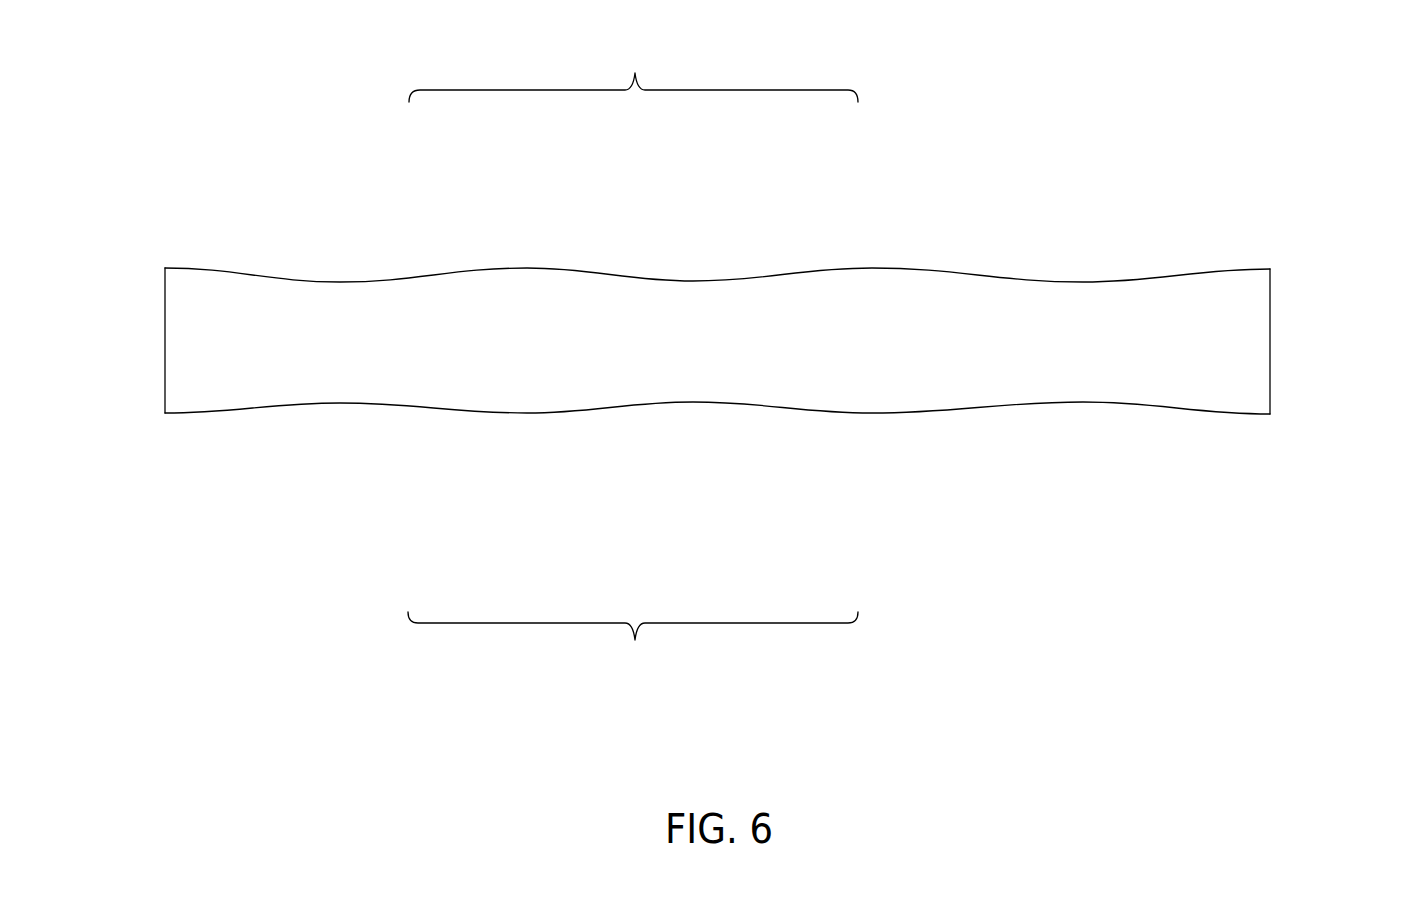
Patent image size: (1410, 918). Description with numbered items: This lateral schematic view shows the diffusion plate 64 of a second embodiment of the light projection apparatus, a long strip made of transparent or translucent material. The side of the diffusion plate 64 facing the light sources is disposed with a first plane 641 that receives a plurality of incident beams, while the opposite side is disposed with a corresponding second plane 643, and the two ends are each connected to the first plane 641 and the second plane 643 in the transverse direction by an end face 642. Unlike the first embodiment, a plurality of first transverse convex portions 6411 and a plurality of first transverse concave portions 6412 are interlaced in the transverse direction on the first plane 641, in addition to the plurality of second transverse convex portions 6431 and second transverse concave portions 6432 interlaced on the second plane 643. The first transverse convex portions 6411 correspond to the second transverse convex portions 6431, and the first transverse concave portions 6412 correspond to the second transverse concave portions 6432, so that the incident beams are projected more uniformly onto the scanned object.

The diffusion plate 64 is at (716, 359).
The first plane 641 is at (717, 538).
The first transverse convex portions 6411 is at (522, 403).
The first transverse concave portions 6412 is at (345, 392).
The end face 642 is at (162, 312).
The second plane 643 is at (717, 166).
The second transverse convex portions 6431 is at (524, 277).
The second transverse concave portions 6432 is at (345, 297).